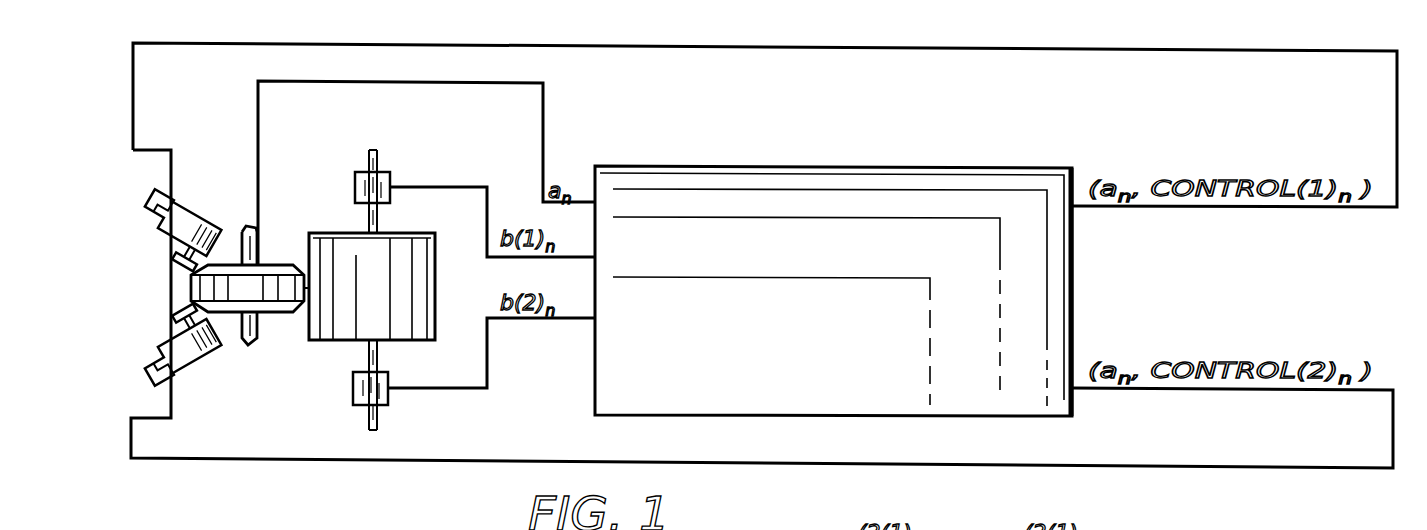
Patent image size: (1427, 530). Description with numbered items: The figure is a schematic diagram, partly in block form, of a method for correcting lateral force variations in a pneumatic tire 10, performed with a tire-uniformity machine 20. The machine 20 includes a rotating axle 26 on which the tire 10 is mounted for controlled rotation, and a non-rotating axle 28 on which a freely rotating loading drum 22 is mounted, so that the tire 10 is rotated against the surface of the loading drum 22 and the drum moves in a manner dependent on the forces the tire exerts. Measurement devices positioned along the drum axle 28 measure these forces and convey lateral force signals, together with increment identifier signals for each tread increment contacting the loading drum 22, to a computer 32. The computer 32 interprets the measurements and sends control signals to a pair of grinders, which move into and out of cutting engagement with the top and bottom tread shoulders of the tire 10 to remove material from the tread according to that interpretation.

The pneumatic tire 10 is at (284, 264).
The tire-uniformity machine 20 is at (1086, 476).
The loading drum 22 is at (340, 318).
The rotating axle 26 is at (246, 227).
The non-rotating axle 28 is at (380, 160).
The computer 32 is at (812, 167).